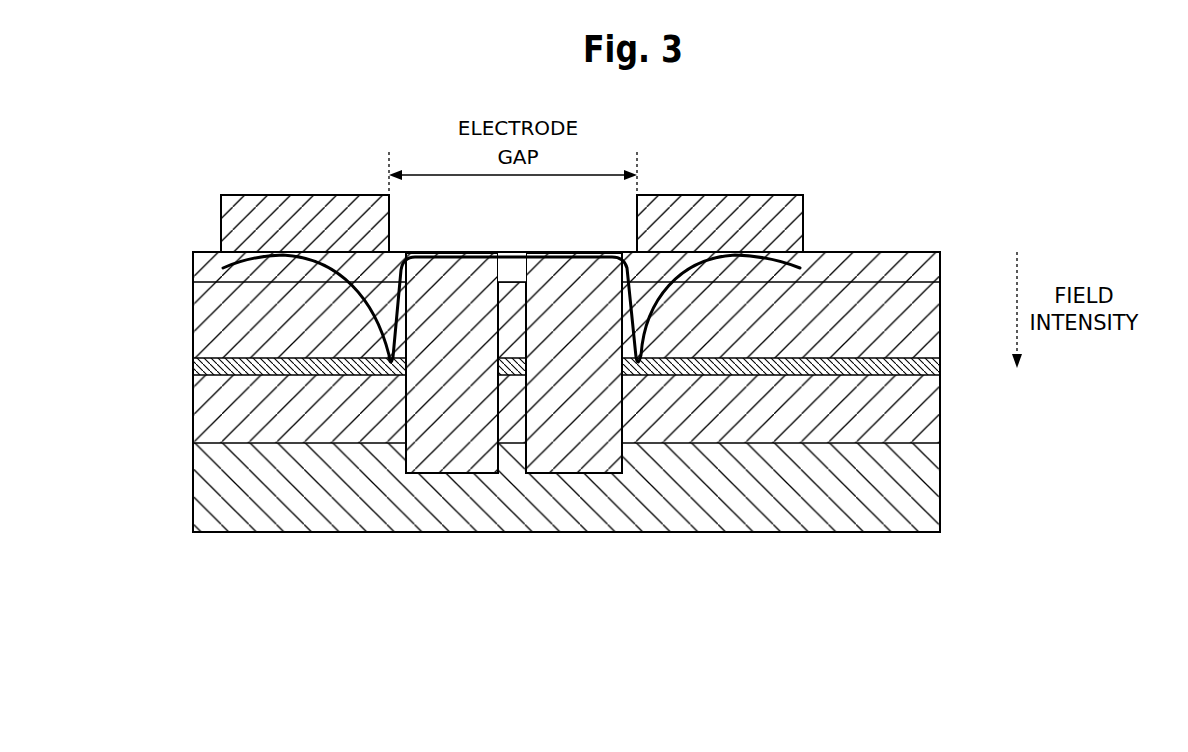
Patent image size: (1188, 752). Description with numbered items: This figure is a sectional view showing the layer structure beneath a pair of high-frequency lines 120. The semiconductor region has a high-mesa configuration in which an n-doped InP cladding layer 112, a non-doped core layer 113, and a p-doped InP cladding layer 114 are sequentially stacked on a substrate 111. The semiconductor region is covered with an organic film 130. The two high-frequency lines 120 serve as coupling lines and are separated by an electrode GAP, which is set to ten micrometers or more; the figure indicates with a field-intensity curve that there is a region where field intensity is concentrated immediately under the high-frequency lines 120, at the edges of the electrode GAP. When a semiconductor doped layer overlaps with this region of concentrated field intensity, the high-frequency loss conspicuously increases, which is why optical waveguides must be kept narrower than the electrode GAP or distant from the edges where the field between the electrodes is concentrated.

The substrate 111 is at (923, 486).
The n-doped InP cladding layer 112 is at (923, 421).
The non-doped core layer 113 is at (923, 367).
The p-doped InP cladding layer 114 is at (923, 315).
The high-frequency lines 120 is at (303, 193).
The organic film 130 is at (574, 283).